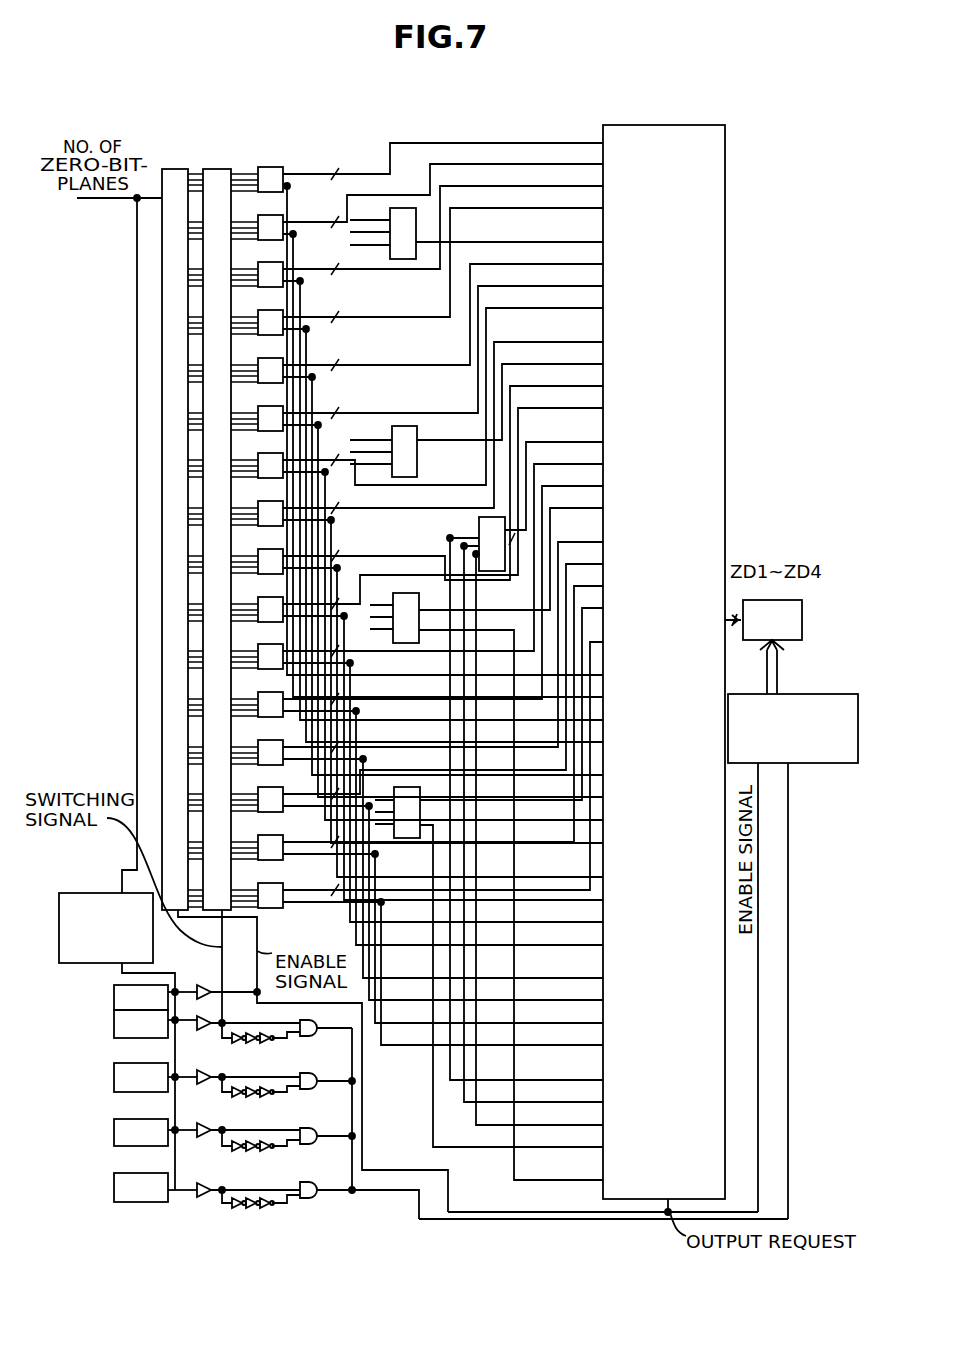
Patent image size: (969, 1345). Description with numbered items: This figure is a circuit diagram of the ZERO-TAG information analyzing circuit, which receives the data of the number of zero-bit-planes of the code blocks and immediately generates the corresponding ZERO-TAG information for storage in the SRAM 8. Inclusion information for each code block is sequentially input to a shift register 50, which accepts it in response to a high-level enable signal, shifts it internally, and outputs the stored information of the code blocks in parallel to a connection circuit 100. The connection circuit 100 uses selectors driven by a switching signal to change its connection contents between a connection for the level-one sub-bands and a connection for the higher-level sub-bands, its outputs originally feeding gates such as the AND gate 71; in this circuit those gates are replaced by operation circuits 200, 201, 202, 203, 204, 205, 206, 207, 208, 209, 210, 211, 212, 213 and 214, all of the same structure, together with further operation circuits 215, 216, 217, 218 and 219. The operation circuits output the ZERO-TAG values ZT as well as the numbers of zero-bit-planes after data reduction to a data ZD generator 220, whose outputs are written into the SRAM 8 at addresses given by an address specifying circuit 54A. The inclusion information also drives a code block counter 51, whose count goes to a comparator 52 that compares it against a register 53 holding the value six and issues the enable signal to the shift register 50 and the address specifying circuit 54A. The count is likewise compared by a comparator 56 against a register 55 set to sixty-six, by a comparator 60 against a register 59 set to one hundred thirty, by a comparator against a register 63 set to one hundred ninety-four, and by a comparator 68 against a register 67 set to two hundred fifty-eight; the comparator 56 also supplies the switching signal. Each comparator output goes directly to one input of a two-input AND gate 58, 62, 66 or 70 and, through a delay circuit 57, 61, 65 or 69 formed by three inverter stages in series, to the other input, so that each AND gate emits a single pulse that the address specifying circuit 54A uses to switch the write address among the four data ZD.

The shift register 50 is at (175, 169).
The connection circuit 100 is at (216, 169).
The operation circuit 200 is at (427, 167).
The operation circuit 201 is at (285, 212).
The operation circuit 202 is at (285, 259).
The operation circuit 203 is at (285, 307).
The operation circuit 204 is at (285, 355).
The operation circuit 205 is at (285, 403).
The operation circuit 206 is at (285, 450).
The operation circuit 207 is at (285, 498).
The operation circuit 208 is at (285, 594).
The operation circuit 209 is at (285, 641).
The operation circuit 210 is at (285, 689).
The operation circuit 211 is at (285, 737).
The operation circuit 212 is at (285, 784).
The operation circuit 213 is at (285, 832).
The operation circuit 214 is at (285, 880).
The operation circuit 215 is at (410, 259).
The operation circuit 216 is at (405, 426).
The operation circuit 217 is at (410, 643).
The operation circuit 218 is at (420, 805).
The operation circuit 219 is at (466, 533).
The data ZD generator 220 is at (725, 265).
The SRAM 8 is at (790, 642).
The address specifying circuit 54A is at (752, 694).
The code block counter 51 is at (122, 893).
The comparator 52 is at (205, 988).
The register 53 is at (116, 992).
The register 55 is at (116, 1037).
The comparator 56 is at (206, 1030).
The delay circuit 57 is at (250, 1045).
The AND gate 58 is at (317, 1027).
The register 59 is at (116, 1069).
The comparator 60 is at (209, 1076).
The delay circuit 61 is at (250, 1099).
The AND gate 62 is at (317, 1081).
The register 63 is at (116, 1125).
The delay circuit 65 is at (250, 1153).
The AND gate 66 is at (317, 1136).
The register 67 is at (116, 1179).
The comparator 68 is at (209, 1183).
The delay circuit 69 is at (250, 1210).
The AND gate 70 is at (317, 1190).
The AND gate 71 is at (209, 1130).